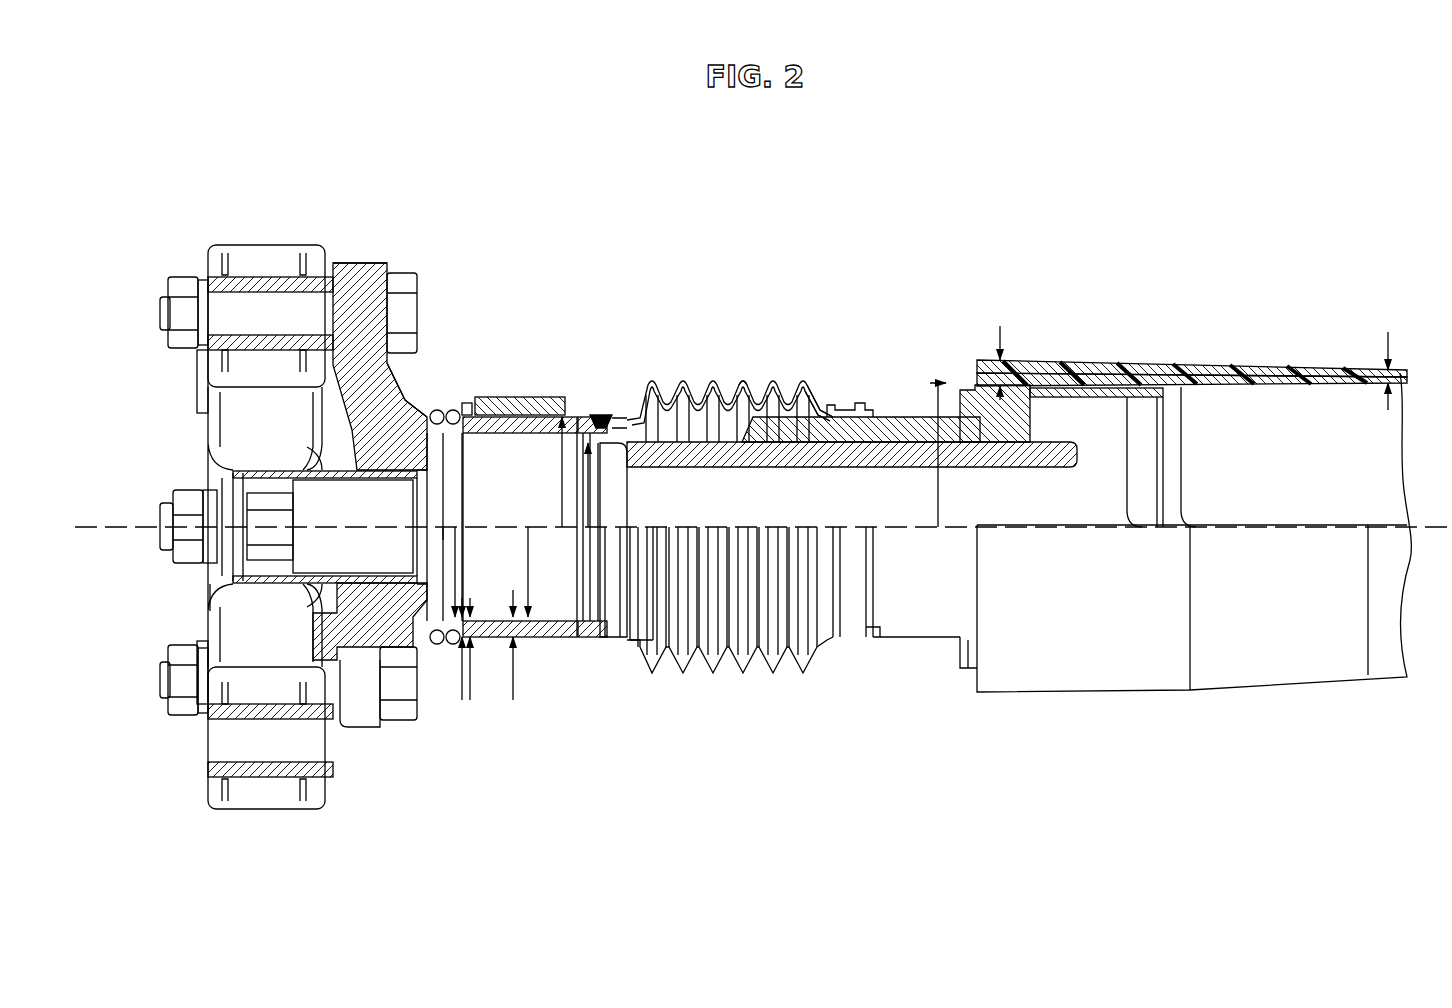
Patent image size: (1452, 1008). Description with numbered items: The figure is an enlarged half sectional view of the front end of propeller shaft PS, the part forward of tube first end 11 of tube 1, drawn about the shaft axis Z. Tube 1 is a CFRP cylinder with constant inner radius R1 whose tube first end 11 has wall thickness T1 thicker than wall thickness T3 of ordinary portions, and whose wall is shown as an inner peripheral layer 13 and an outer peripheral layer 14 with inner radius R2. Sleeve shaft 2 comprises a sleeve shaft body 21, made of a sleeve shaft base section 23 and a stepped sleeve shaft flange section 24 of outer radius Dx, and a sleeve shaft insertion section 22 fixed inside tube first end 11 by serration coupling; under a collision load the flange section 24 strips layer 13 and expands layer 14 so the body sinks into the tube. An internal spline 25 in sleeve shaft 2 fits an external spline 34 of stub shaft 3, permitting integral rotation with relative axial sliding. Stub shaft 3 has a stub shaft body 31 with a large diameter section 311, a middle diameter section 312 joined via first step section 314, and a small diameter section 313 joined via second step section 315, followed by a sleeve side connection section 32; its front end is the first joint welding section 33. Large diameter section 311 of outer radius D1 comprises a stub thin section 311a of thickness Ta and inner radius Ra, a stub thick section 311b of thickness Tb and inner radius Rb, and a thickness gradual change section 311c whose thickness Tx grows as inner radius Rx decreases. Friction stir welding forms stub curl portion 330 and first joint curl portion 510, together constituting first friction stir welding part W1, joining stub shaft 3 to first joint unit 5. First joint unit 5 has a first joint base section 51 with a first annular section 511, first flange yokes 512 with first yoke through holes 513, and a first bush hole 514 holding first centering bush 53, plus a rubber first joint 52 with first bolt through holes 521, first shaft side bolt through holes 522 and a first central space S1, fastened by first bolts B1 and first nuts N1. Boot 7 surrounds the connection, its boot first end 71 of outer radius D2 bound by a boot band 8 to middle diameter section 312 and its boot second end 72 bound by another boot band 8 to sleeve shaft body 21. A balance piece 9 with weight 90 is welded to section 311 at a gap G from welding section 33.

The tube 1 is at (1300, 697).
The tube first end 11 is at (1066, 692).
The inner peripheral layer 13 is at (1100, 378).
The outer peripheral layer 14 is at (1082, 364).
The propeller shaft PS is at (1330, 358).
The sleeve shaft 2 is at (921, 650).
The sleeve shaft body 21 is at (965, 248).
The sleeve shaft insertion section 22 is at (1047, 388).
The sleeve shaft base section 23 is at (920, 418).
The sleeve shaft flange section 24 is at (978, 382).
The internal spline 25 is at (805, 438).
The stub shaft 3 is at (568, 650).
The stub shaft body 31 is at (690, 243).
The large diameter section 311 is at (548, 417).
The stub thin section 311a is at (407, 472).
The stub thick section 311b is at (520, 433).
The thickness gradual change section 311c is at (472, 435).
The middle diameter section 312 is at (588, 415).
The small diameter section 313 is at (624, 440).
The first step section 314 is at (590, 415).
The second step section 315 is at (608, 413).
The sleeve side connection section 32 is at (690, 398).
The first joint welding section 33 is at (467, 615).
The stub curl portion 330 is at (453, 643).
The external spline 34 is at (746, 380).
The first joint unit 5 is at (250, 122).
The first joint base section 51 is at (355, 255).
The first joint curl portion 510 is at (440, 642).
The first annular section 511 is at (420, 408).
The first flange yoke 512 is at (410, 345).
The first yoke through hole 513 is at (388, 258).
The first bush hole 514 is at (313, 463).
The first joint 52 is at (275, 240).
The first bolt through hole 521 is at (262, 300).
The first shaft side bolt through hole 522 is at (255, 770).
The first centering bush 53 is at (220, 577).
The boot 7 is at (737, 678).
The boot first end 71 is at (612, 640).
The boot second end 72 is at (875, 640).
The boot band 8 is at (612, 625).
The balance piece 9 is at (520, 364).
The weight 90 is at (515, 398).
The first bolt B1 is at (405, 290).
The first nut N1 is at (177, 280).
The gap G is at (465, 402).
The first central space S1 is at (243, 625).
The first friction stir welding part W1 is at (492, 828).
The outer radius of large diameter section D1 is at (562, 507).
The outer radius of boot first end D2 is at (590, 507).
The outer radius of sleeve shaft flange section Dx is at (938, 492).
The inner radius of stub thin section Ra is at (443, 540).
The inner radius of stub thick section Rb is at (530, 540).
The inner radius of large diameter section Rx is at (457, 540).
The inner radius of tube R1 is at (1137, 518).
The inner radius of outer peripheral layer R2 is at (1192, 518).
The wall thickness of tube first end T1 is at (1000, 326).
The wall thickness of tube T3 is at (1388, 332).
The wall thickness of stub thin section Ta is at (464, 660).
The wall thickness of stub thick section Tb is at (514, 660).
The wall thickness of thickness gradual change section Tx is at (474, 662).
The axis Z is at (1420, 527).